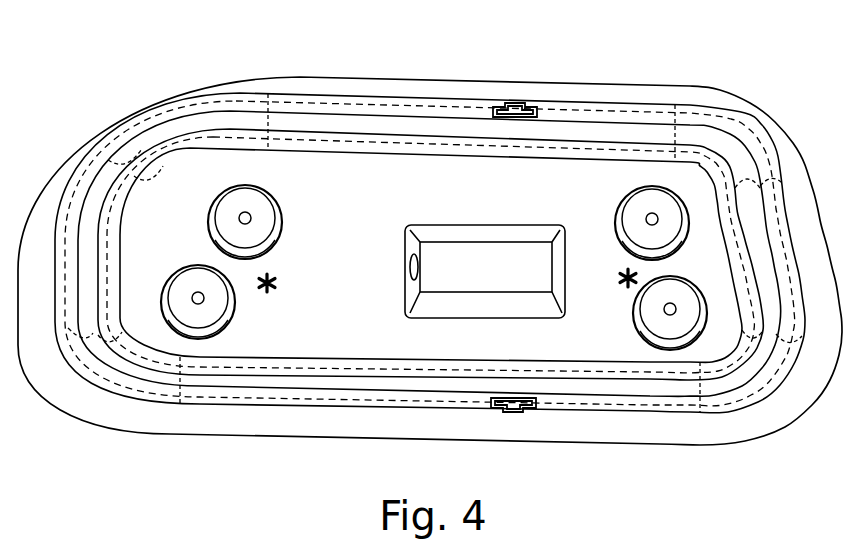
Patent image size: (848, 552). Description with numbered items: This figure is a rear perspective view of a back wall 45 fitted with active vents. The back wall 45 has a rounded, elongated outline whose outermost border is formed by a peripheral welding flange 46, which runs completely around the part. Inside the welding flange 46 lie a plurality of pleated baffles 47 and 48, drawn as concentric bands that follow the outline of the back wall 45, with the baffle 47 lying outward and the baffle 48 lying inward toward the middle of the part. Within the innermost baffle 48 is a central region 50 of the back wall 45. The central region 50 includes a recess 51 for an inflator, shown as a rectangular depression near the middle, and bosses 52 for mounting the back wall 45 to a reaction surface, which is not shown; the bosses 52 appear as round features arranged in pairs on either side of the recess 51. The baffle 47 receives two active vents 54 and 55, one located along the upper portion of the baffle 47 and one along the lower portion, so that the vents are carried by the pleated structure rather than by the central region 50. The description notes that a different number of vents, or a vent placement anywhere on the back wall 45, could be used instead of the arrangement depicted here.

The back wall 45 is at (692, 82).
The peripheral welding flange 46 is at (446, 90).
The pleated baffle 47 is at (222, 108).
The pleated baffle 48 is at (321, 147).
The central region 50 is at (300, 337).
The recess 51 is at (442, 305).
The bosses 52 is at (240, 233).
The active vent 54 is at (516, 398).
The active vent 55 is at (513, 103).